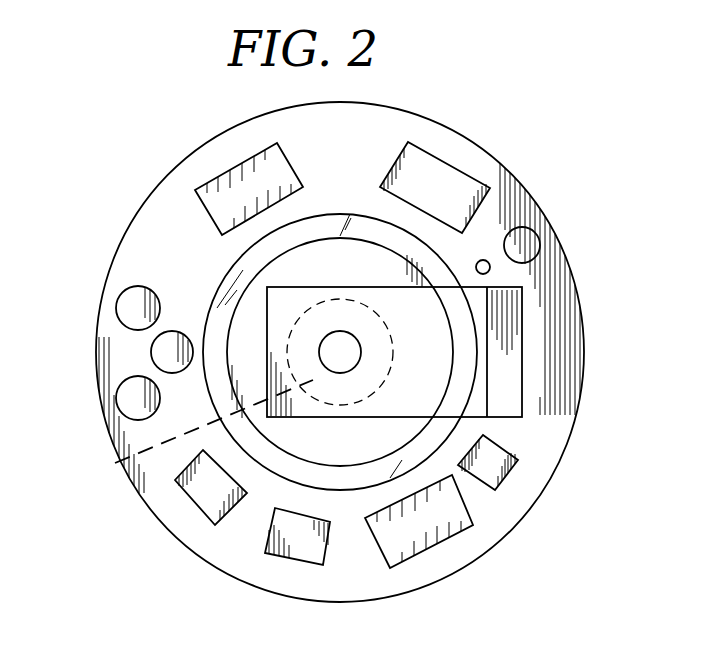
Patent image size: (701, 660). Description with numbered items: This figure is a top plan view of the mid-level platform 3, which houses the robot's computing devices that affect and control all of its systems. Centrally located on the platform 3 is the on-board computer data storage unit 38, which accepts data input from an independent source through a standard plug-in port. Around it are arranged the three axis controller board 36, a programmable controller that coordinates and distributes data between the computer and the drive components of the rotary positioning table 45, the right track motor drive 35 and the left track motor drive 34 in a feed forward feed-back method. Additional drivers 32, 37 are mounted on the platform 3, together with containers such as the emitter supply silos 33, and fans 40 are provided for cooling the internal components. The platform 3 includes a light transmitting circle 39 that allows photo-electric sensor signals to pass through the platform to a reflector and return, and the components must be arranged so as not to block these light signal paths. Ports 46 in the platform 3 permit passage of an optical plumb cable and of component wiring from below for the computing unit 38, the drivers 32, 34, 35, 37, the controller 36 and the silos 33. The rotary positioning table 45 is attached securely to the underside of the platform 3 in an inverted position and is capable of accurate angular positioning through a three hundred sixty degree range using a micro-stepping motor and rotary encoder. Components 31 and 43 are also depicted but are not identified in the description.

The mid-level platform 3 is at (493, 84).
The sensor window 31 is at (442, 182).
The driver 32 is at (245, 180).
The emitter supply silos 33 is at (138, 307).
The left track motor drive 34 is at (205, 497).
The right track motor drive 35 is at (290, 548).
The three axis controller board 36 is at (423, 532).
The driver 37 is at (493, 462).
The on-board computer data storage unit 38 is at (428, 322).
The light transmitting circle 39 is at (443, 273).
The fans 40 is at (533, 240).
The mounting flange 43 is at (510, 382).
The rotary positioning table 45 is at (115, 463).
The ports 46 is at (490, 270).